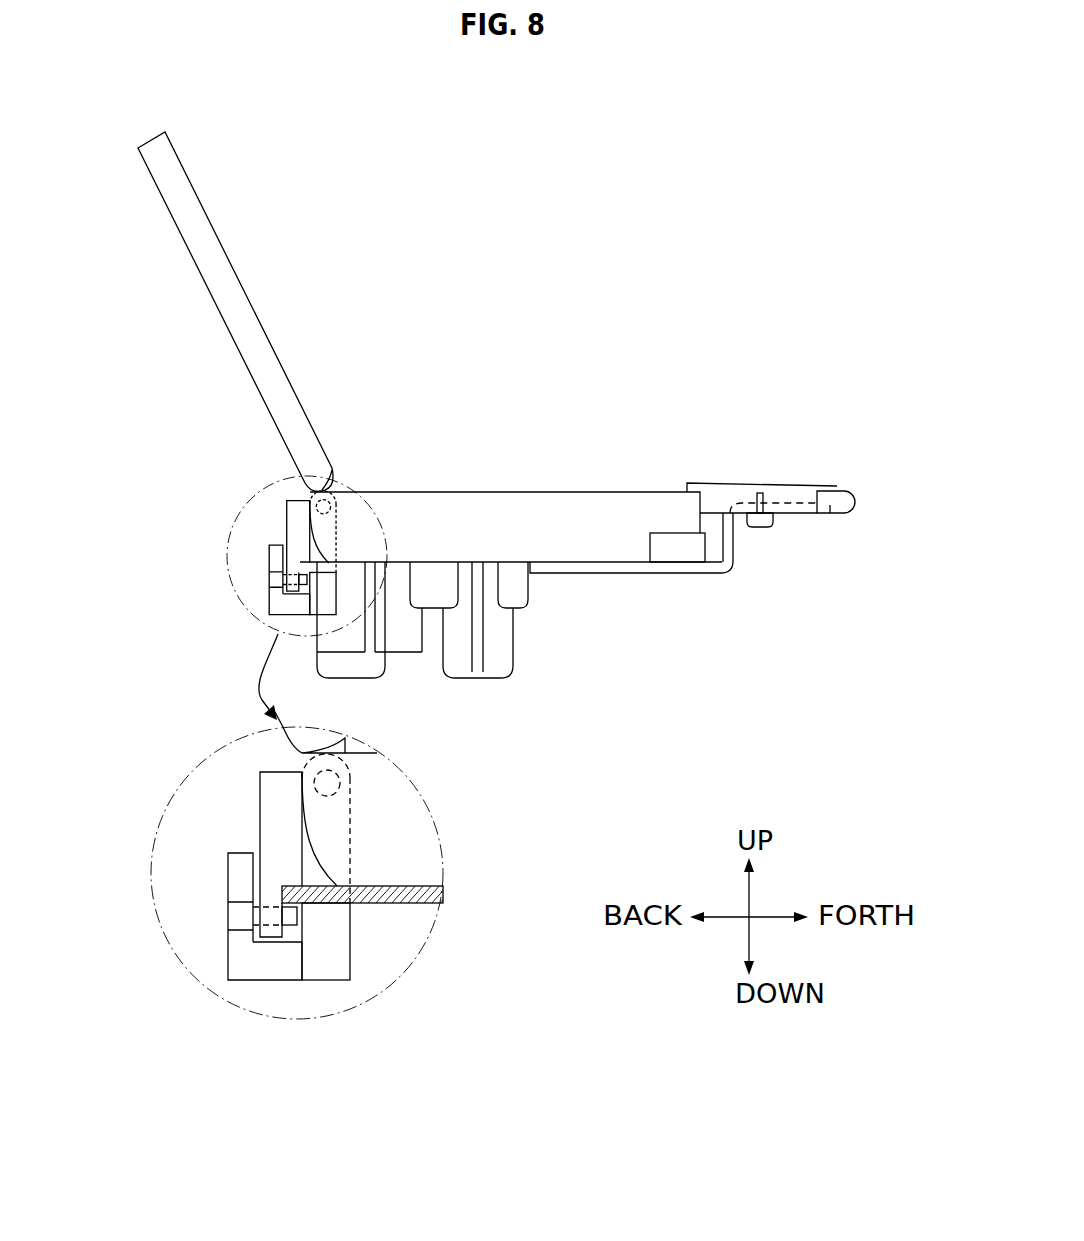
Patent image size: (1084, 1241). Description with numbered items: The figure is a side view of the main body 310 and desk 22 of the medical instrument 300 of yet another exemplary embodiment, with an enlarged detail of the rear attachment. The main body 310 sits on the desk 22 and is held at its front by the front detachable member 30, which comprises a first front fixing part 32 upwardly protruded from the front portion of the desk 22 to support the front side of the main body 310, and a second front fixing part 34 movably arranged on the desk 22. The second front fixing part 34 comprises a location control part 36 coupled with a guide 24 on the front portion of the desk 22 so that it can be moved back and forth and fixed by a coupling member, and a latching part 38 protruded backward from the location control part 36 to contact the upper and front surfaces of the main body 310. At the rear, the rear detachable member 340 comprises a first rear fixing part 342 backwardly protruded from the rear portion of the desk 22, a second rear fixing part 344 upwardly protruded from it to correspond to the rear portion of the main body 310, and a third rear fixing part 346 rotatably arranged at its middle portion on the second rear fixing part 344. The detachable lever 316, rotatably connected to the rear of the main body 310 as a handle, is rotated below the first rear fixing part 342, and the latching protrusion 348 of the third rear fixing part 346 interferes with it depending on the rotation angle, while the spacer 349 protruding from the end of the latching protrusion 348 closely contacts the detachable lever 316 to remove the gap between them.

The medical instrument 300 is at (563, 308).
The main body 310 is at (453, 486).
The desk 22 is at (602, 575).
The guide 24 is at (727, 532).
The front detachable member 30 is at (806, 663).
The first front fixing part 32 is at (676, 563).
The second front fixing part 34 is at (786, 530).
The location control part 36 is at (842, 490).
The latching part 38 is at (692, 483).
The detachable lever 316 is at (340, 955).
The rear detachable member 340 is at (240, 777).
The first rear fixing part 342 is at (332, 900).
The second rear fixing part 344 is at (263, 808).
The third rear fixing part 346 is at (232, 912).
The latching protrusion 348 is at (233, 963).
The spacer 349 is at (288, 975).